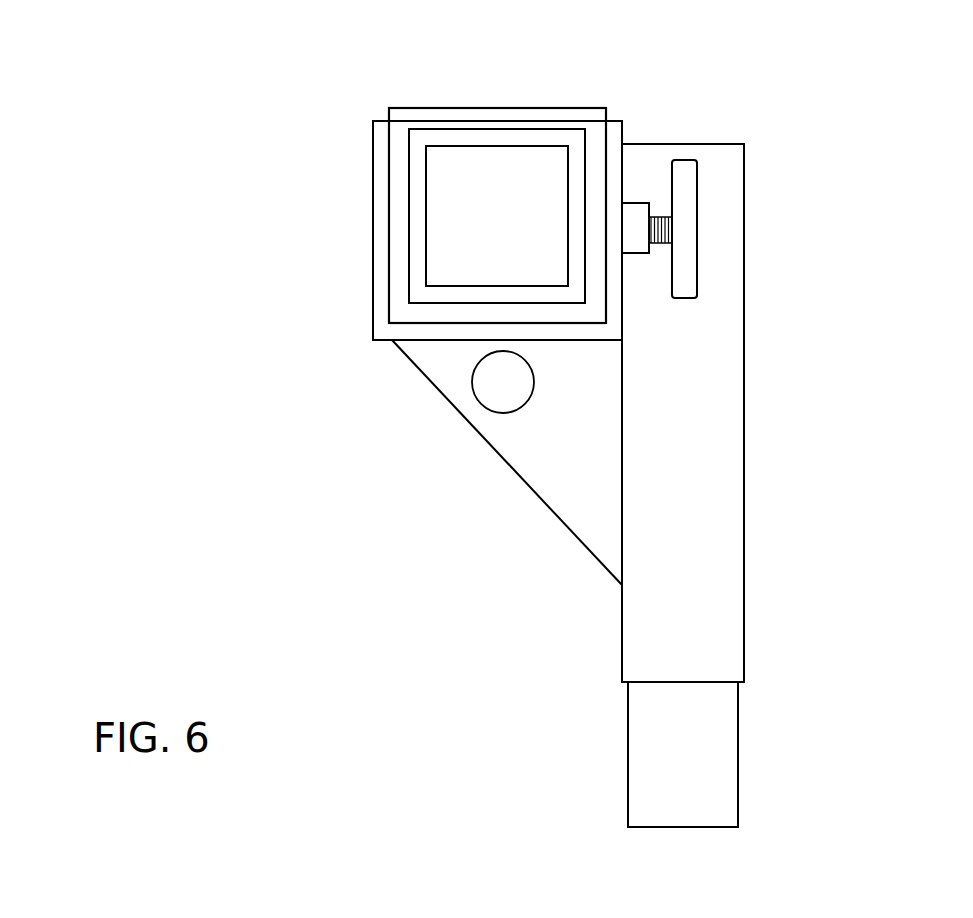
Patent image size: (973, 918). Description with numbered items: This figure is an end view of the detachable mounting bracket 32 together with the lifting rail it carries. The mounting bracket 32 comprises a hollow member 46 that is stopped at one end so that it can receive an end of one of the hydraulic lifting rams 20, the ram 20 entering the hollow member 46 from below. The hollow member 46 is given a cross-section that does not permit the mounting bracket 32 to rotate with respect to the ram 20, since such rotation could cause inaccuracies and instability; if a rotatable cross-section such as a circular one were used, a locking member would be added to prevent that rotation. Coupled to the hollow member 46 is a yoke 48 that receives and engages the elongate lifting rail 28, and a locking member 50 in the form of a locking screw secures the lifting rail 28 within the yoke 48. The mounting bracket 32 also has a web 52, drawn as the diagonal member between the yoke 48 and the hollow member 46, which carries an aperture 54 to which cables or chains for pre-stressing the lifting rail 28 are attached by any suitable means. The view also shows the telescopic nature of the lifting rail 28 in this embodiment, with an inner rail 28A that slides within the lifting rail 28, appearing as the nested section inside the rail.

The hydraulic lifting ram 20 is at (627, 762).
The elongate lifting rail 28 is at (390, 111).
The inner rail 28A is at (415, 195).
The detachable mounting bracket 32 is at (800, 360).
The hollow member 46 is at (703, 452).
The yoke 48 is at (380, 289).
The locking member 50 is at (697, 230).
The web 52 is at (587, 512).
The aperture 54 is at (498, 383).